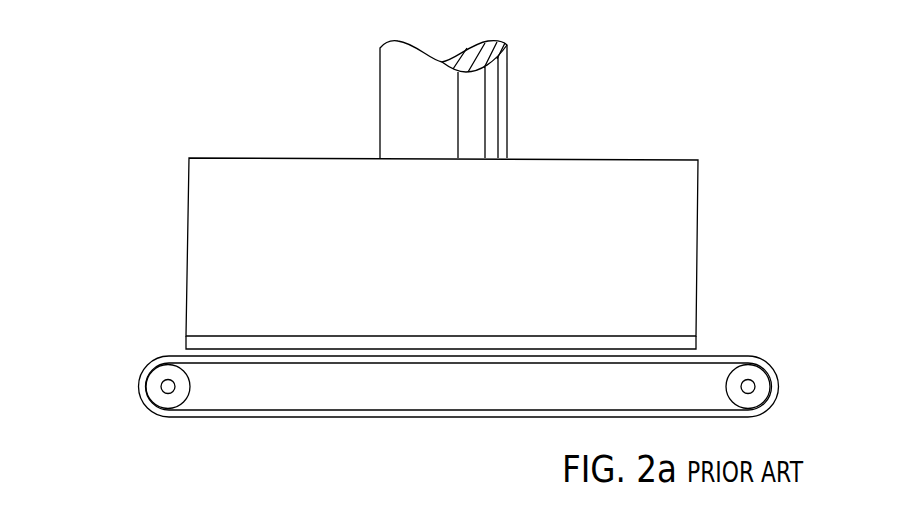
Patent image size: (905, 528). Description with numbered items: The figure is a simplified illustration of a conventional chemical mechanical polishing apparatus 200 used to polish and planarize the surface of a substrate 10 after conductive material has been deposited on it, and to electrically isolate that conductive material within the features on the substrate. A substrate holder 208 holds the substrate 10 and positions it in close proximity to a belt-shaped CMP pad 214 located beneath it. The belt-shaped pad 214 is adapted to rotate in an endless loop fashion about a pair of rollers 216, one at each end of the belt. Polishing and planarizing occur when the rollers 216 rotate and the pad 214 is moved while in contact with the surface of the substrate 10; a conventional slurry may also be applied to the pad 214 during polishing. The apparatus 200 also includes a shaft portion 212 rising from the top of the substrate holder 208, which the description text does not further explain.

The conventional CMP apparatus 200 is at (143, 203).
The substrate holder 208 is at (696, 222).
The substrate 10 is at (696, 338).
The ink supply cylinder 212 is at (508, 100).
The belt-shaped CMP pad 214 is at (760, 356).
The rollers 216 is at (758, 390).